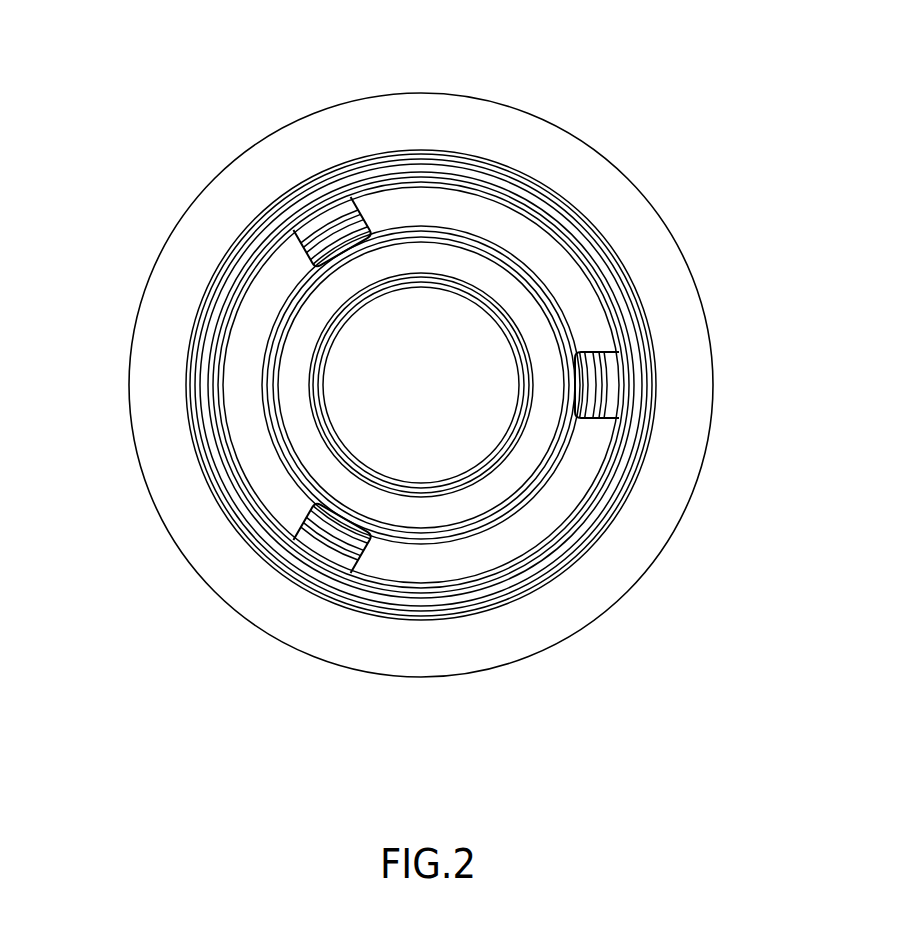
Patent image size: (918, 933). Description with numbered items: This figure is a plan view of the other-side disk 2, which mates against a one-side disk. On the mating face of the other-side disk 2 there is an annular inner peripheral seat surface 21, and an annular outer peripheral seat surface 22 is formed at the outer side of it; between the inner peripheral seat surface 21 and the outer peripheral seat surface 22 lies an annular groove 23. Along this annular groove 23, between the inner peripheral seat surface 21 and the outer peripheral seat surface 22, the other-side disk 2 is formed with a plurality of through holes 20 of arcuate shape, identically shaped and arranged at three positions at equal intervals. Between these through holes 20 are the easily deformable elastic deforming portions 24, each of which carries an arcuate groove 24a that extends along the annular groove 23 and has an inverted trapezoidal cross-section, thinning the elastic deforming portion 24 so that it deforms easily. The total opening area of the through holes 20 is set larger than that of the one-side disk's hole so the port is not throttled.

The other-side disk 2 is at (624, 604).
The through holes 20 is at (492, 215).
The inner peripheral seat surface 21 is at (352, 490).
The outer peripheral seat surface 22 is at (315, 192).
The annular groove 23 is at (232, 291).
The elastic deforming portions 24 is at (343, 210).
The arcuate groove 24a is at (312, 224).